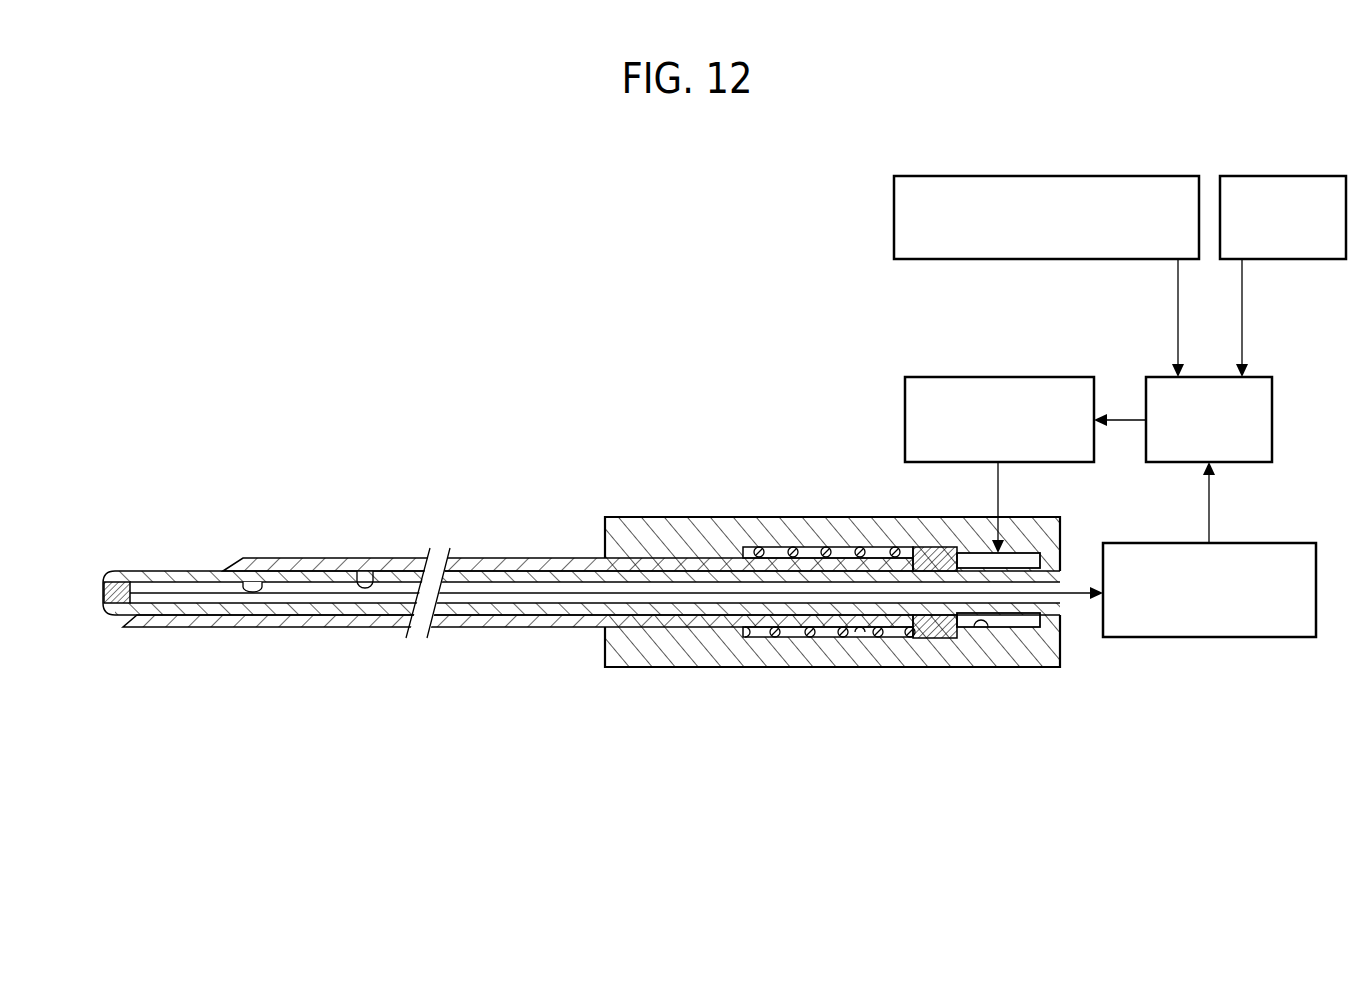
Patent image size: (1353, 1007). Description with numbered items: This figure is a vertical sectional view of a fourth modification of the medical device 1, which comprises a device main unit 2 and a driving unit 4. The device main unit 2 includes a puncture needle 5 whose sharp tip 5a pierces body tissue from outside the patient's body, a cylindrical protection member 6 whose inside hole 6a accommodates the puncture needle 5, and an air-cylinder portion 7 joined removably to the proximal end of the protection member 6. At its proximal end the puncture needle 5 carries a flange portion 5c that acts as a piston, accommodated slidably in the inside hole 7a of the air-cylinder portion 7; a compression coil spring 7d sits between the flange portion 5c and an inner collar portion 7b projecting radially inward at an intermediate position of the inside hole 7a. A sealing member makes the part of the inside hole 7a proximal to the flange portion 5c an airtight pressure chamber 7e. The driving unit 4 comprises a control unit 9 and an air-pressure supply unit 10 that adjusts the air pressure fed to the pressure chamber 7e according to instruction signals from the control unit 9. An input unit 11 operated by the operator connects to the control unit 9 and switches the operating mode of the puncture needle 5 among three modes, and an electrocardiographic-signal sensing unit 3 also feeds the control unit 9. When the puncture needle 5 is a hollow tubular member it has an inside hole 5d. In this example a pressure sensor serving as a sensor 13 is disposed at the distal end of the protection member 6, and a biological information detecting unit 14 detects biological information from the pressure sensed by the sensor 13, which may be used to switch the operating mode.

The medical device 1 is at (770, 264).
The device main unit 2 is at (592, 468).
The electrocardiographic-signal sensing unit 3 is at (1138, 176).
The driving unit 4 is at (1092, 316).
The puncture needle 5 is at (312, 558).
The tip 5a is at (128, 630).
The flange portion 5c is at (929, 638).
The inside hole 5d is at (374, 585).
The protection member 6 is at (188, 571).
The inside hole 6a is at (262, 582).
The air-cylinder portion 7 is at (876, 517).
The inside hole 7a is at (862, 637).
The inner collar portion 7b is at (752, 547).
The compression coil spring 7d is at (828, 547).
The pressure chamber 7e is at (982, 627).
The control unit 9 is at (1152, 377).
The air-pressure supply unit 10 is at (997, 377).
The input unit 11 is at (1285, 176).
The sensor 13 is at (100, 590).
The biological information detecting unit 14 is at (1209, 637).